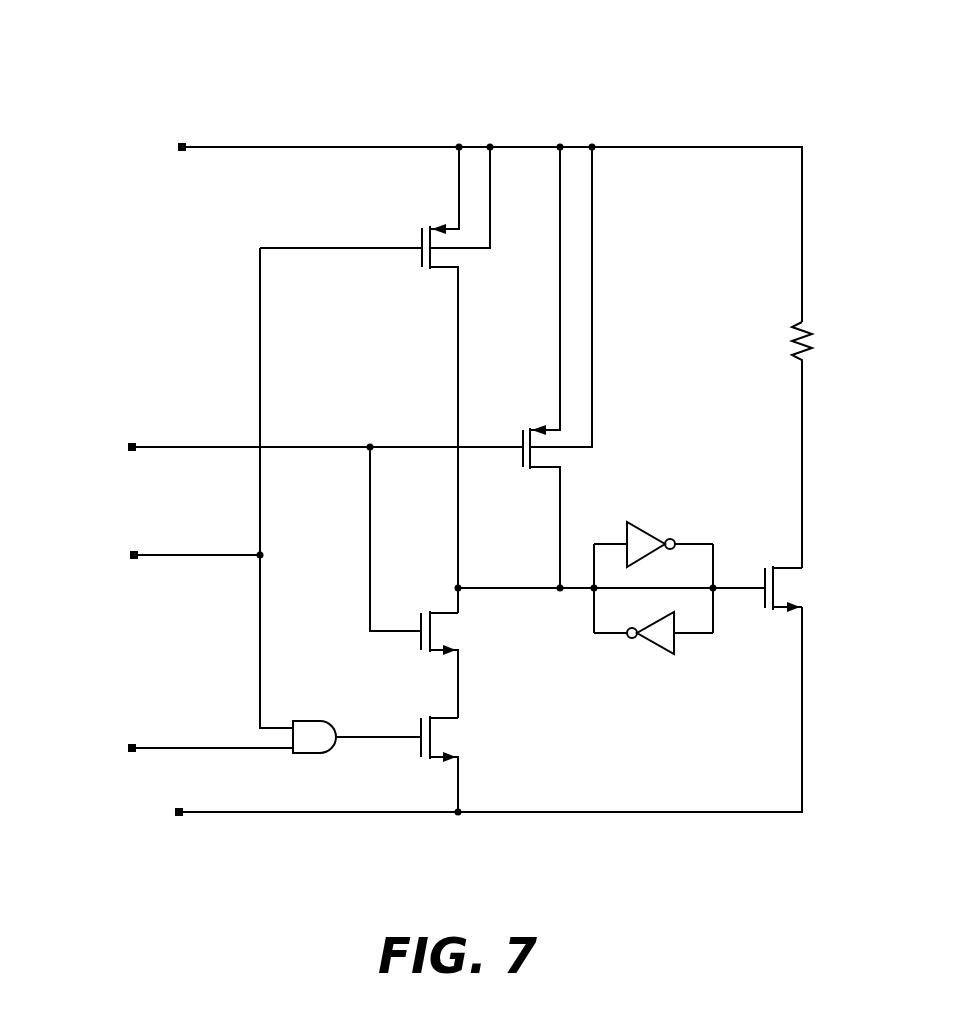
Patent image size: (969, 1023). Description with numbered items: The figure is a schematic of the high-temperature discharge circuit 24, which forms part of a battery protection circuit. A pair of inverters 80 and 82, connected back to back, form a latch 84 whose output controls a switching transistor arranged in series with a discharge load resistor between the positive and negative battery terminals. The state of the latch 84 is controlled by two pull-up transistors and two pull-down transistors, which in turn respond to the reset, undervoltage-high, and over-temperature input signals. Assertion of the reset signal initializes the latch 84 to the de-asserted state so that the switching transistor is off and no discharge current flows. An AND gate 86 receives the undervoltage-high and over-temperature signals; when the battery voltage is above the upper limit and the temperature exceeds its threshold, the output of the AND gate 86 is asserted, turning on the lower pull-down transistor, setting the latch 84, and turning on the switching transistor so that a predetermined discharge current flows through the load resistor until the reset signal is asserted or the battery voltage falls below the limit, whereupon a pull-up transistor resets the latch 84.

The high-temperature discharge circuit 24 is at (600, 95).
The inverter 80 is at (648, 527).
The inverter 82 is at (655, 647).
The latch 84 is at (668, 605).
The AND gate 86 is at (310, 720).